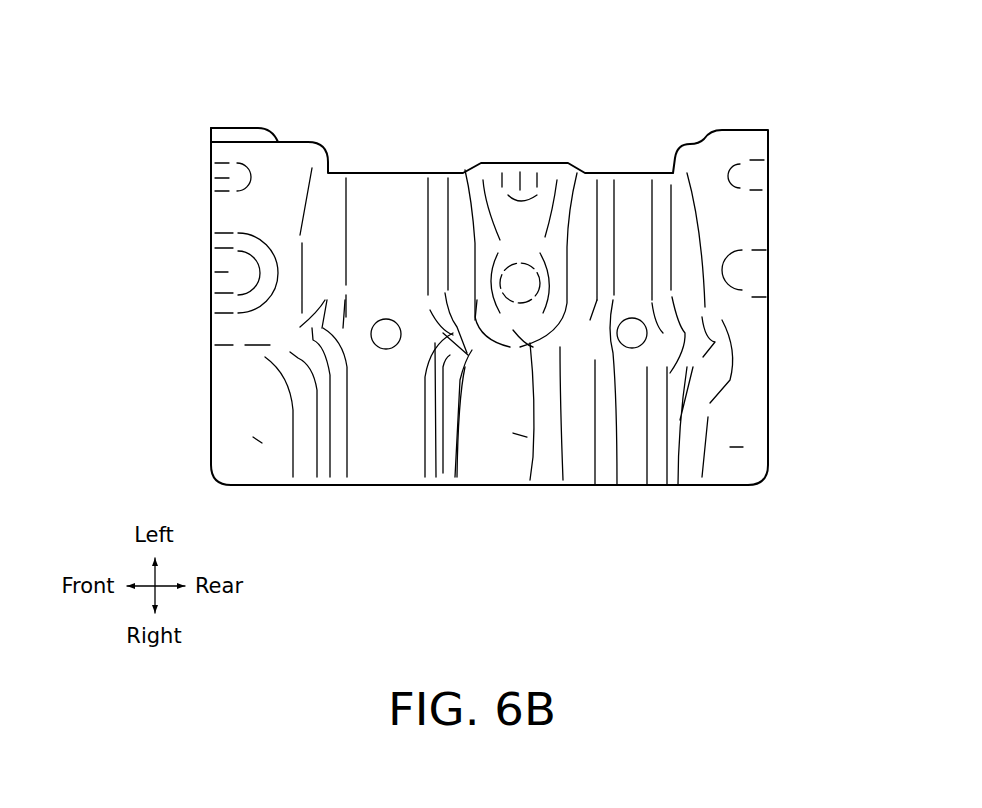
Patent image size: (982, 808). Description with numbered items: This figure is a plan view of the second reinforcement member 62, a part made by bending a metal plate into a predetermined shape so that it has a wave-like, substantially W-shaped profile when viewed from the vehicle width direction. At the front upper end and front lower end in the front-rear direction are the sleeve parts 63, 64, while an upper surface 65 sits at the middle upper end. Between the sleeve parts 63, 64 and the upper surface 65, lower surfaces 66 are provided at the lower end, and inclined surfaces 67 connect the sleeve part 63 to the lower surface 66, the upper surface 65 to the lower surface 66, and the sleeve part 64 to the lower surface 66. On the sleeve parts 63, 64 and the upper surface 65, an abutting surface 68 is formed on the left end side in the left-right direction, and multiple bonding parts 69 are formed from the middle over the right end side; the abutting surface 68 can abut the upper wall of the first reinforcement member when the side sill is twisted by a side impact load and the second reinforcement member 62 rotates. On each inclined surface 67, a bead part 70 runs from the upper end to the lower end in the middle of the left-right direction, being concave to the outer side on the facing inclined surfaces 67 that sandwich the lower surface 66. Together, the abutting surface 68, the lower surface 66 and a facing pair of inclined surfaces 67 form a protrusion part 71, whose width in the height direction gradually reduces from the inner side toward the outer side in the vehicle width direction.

The second reinforcement member 62 is at (398, 108).
The sleeve part 63 is at (212, 410).
The sleeve part 64 is at (768, 383).
The upper surface 65 is at (470, 370).
The lower surface 66 is at (377, 437).
The inclined surface 67 is at (590, 280).
The abutting surface 68 is at (253, 437).
The bonding part 69 is at (228, 272).
The bead part 70 is at (300, 340).
The protrusion part 71 is at (333, 487).